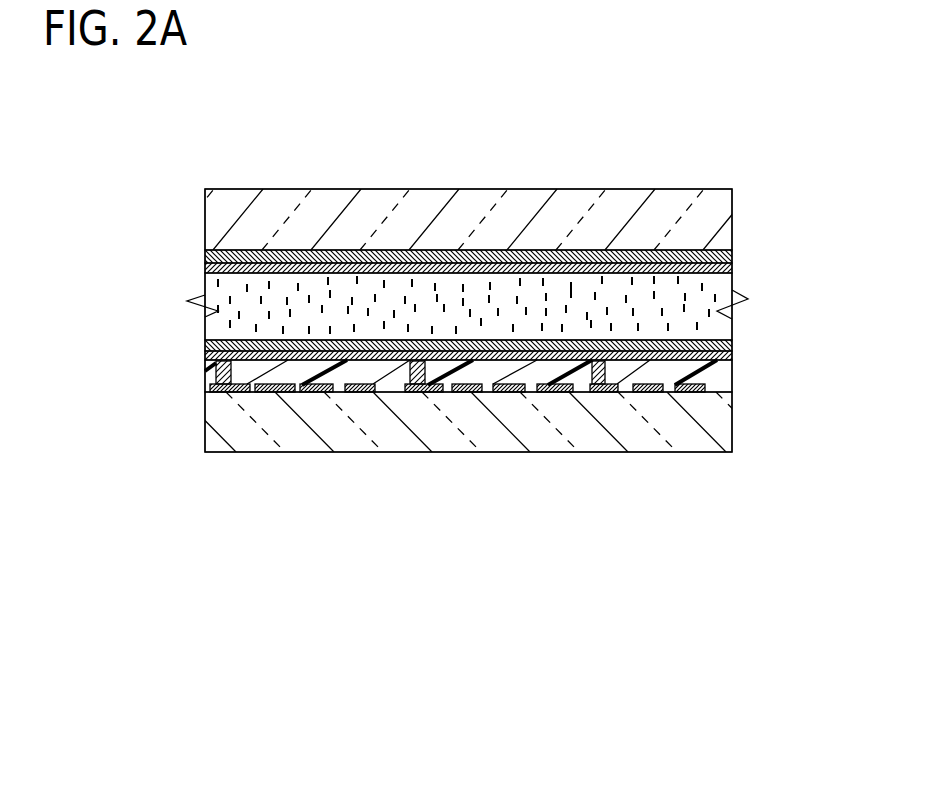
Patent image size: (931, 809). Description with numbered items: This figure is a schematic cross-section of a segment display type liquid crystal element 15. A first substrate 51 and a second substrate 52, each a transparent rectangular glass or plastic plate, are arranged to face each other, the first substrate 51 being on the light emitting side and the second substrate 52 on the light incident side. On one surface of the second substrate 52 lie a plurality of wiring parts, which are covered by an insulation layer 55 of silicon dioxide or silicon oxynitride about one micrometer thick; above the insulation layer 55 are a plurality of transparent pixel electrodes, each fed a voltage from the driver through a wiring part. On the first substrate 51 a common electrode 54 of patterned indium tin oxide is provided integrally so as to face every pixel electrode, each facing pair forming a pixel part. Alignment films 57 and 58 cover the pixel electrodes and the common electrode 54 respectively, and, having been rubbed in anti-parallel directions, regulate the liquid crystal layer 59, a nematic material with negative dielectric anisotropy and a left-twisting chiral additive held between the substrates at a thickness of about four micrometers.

The liquid crystal element 15 is at (482, 578).
The first substrate 51 is at (732, 222).
The second substrate 52 is at (732, 435).
The common electrode 54 is at (732, 252).
The insulation layer 55 is at (732, 378).
The alignment film 57 is at (732, 343).
The alignment film 58 is at (732, 268).
The liquid crystal layer 59 is at (750, 298).